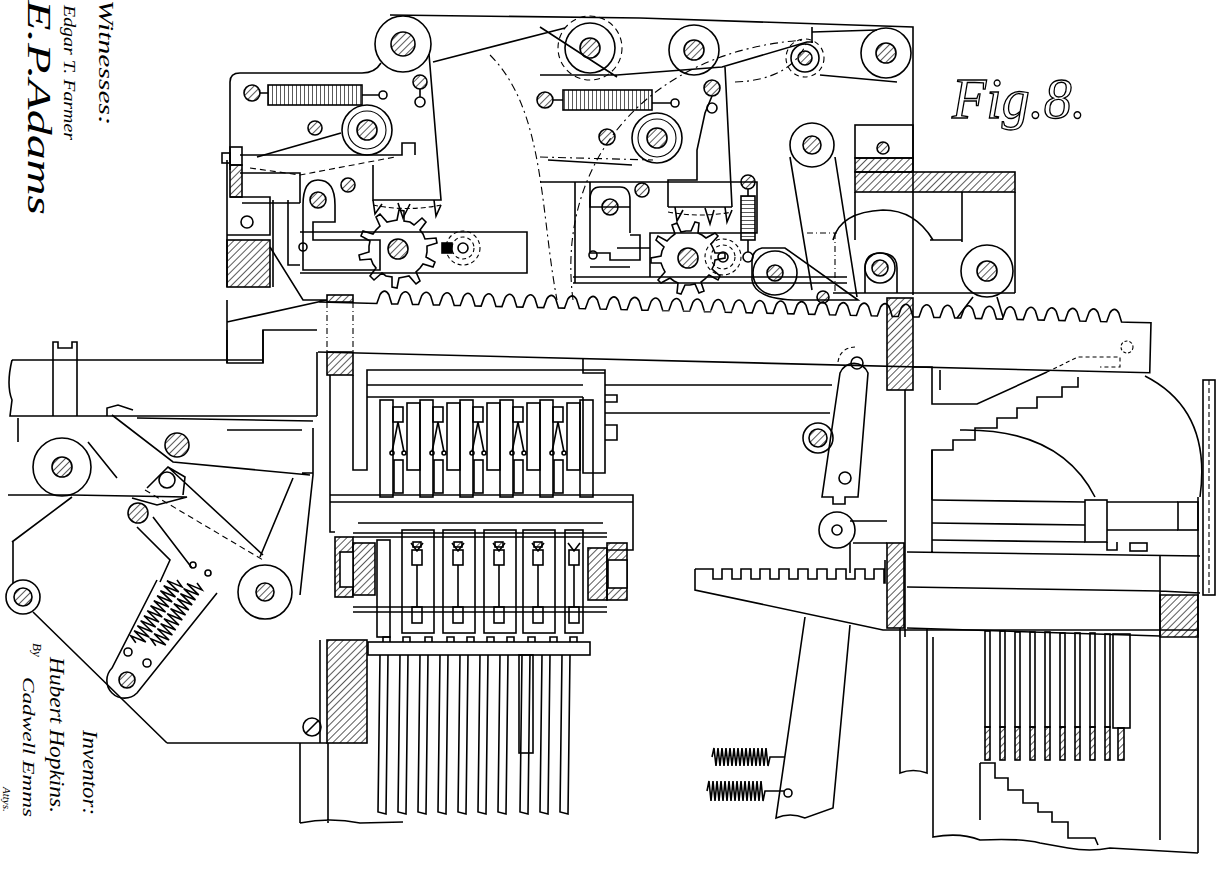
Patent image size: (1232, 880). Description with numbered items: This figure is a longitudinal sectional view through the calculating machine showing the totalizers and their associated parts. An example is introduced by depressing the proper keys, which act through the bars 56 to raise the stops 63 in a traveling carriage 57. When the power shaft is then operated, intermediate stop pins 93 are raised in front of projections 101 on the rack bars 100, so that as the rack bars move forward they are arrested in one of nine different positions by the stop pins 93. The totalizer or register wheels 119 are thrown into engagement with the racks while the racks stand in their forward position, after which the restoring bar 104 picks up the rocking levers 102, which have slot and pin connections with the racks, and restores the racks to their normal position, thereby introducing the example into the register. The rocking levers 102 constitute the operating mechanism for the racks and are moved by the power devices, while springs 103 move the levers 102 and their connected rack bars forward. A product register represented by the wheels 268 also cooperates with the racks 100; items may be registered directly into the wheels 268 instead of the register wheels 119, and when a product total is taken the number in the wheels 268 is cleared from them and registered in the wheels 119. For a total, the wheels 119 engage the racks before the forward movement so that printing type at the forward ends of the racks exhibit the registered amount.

The rack bars 100 is at (734, 331).
The projections 101 is at (583, 360).
The rocking levers 102 is at (853, 437).
The springs 103 is at (710, 783).
The restoring bar 104 is at (804, 441).
The totalizer or register wheels 119 is at (373, 270).
The product register wheels 268 is at (702, 331).
The intermediate stop pins 93 is at (560, 485).
The traveling carriage 57 is at (628, 571).
The stops 63 is at (403, 618).
The bars 56 is at (547, 730).